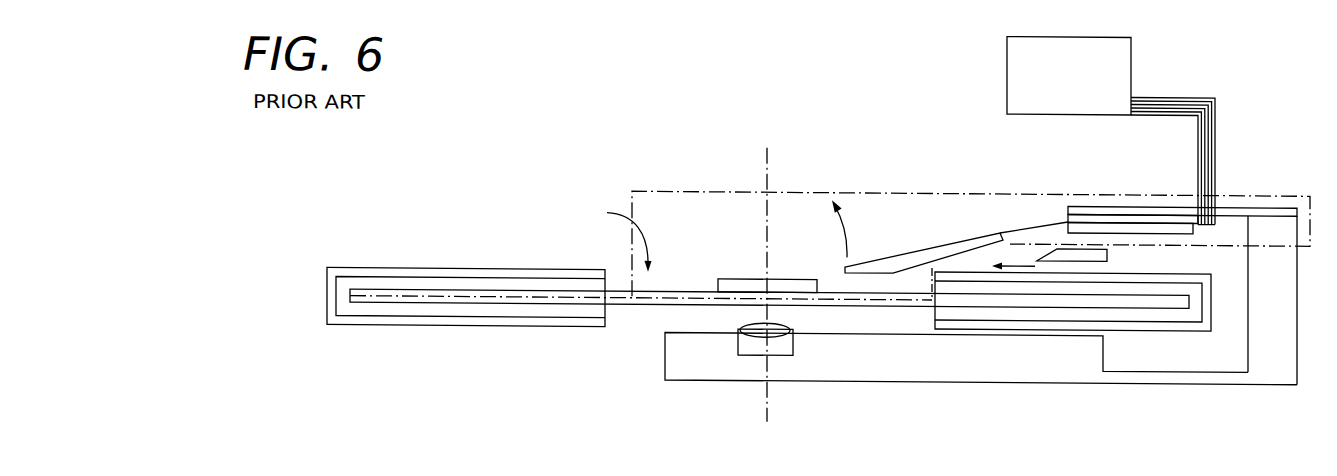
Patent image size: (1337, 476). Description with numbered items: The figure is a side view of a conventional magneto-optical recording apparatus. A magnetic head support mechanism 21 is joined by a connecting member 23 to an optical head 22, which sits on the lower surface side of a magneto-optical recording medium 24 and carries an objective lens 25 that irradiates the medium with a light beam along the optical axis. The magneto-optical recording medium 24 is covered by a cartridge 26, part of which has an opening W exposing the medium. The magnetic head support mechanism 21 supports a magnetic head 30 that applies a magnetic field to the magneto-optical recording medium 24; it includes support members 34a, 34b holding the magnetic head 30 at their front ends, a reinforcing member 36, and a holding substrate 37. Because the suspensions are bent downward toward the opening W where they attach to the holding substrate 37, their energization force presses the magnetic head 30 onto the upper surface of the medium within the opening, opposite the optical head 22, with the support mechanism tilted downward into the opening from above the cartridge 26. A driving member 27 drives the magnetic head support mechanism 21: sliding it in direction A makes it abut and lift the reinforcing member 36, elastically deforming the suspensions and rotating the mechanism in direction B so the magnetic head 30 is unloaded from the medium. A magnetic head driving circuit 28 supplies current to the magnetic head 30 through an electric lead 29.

The magnetic head support mechanism 21 is at (875, 192).
The optical head 22 is at (968, 364).
The connecting member 23 is at (1270, 370).
The magneto-optical recording medium 24 is at (618, 306).
The objective lens 25 is at (748, 344).
The cartridge 26 is at (1145, 328).
The driving member 27 is at (1098, 250).
The magnetic head driving circuit 28 is at (1123, 50).
The electric lead 29 is at (1217, 119).
The magnetic head 30 is at (810, 293).
The support member 34a is at (1040, 190).
The support member 34b is at (1041, 224).
The reinforcing member 36 is at (902, 261).
The holding substrate 37 is at (1246, 205).